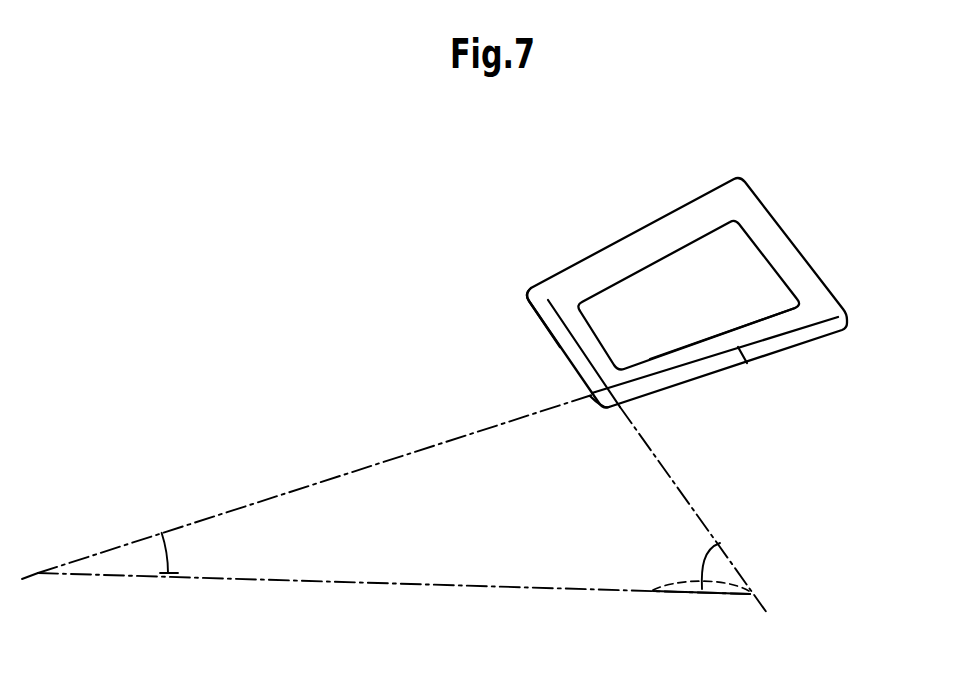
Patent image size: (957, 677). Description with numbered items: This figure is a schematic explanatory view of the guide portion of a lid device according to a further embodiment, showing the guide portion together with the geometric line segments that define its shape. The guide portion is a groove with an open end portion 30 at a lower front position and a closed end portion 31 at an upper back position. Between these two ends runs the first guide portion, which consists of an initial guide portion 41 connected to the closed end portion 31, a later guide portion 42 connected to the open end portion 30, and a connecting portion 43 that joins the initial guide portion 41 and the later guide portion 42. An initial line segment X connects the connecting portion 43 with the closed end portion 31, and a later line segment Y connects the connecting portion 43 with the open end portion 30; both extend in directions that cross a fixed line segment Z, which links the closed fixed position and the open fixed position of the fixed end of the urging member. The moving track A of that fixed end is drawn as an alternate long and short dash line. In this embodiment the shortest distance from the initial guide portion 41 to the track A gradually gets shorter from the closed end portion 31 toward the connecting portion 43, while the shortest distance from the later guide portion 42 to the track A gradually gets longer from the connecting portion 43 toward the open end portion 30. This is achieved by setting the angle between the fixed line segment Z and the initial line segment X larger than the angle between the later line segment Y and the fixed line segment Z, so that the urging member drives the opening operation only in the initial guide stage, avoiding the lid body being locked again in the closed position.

The open end portion 30 is at (850, 323).
The closed end portion 31 is at (524, 297).
The initial guide portion 41 is at (600, 342).
The later guide portion 42 is at (703, 343).
The connecting portion 43 is at (599, 408).
The initial line segment X is at (570, 338).
The later line segment Y is at (747, 363).
The fixed line segment Z is at (681, 594).
The moving track A is at (680, 580).